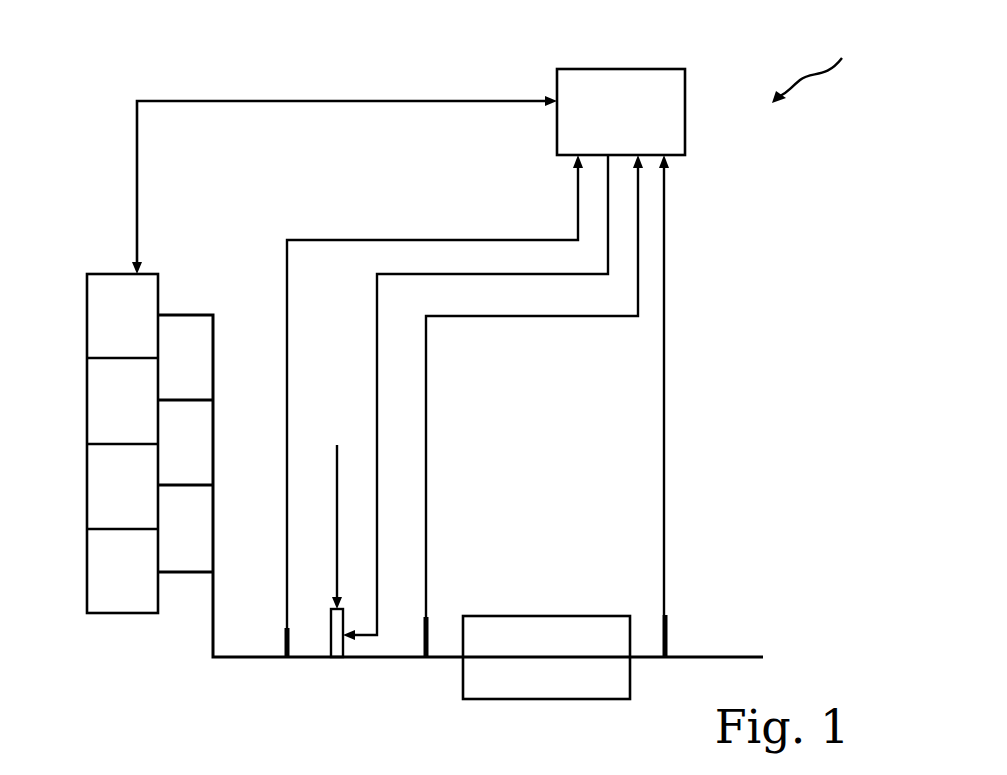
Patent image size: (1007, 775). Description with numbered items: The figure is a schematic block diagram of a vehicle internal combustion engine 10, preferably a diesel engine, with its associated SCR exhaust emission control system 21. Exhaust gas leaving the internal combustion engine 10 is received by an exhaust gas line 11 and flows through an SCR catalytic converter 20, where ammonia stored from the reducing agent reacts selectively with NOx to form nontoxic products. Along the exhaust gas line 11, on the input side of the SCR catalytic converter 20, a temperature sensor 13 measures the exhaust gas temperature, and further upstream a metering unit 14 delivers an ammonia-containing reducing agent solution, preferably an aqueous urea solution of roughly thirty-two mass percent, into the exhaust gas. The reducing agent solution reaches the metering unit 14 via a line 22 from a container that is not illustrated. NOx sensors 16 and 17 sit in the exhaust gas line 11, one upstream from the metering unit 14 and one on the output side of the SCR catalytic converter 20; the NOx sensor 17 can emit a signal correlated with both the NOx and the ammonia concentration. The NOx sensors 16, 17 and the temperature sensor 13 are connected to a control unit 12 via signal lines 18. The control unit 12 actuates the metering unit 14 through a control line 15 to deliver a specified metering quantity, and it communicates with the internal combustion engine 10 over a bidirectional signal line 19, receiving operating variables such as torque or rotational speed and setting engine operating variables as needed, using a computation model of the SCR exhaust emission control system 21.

The internal combustion engine 10 is at (100, 321).
The exhaust gas line 11 is at (215, 657).
The control unit 12 is at (621, 78).
The temperature sensor 13 is at (428, 620).
The metering unit 14 is at (331, 648).
The control line 15 is at (377, 325).
The NOx sensor 16 is at (285, 632).
The NOx sensor 17 is at (668, 630).
The signal lines 18 is at (578, 212).
The bidirectional signal line 19 is at (238, 101).
The SCR catalytic converter 20 is at (557, 624).
The SCR exhaust emission control system 21 is at (822, 67).
The line 22 is at (335, 457).